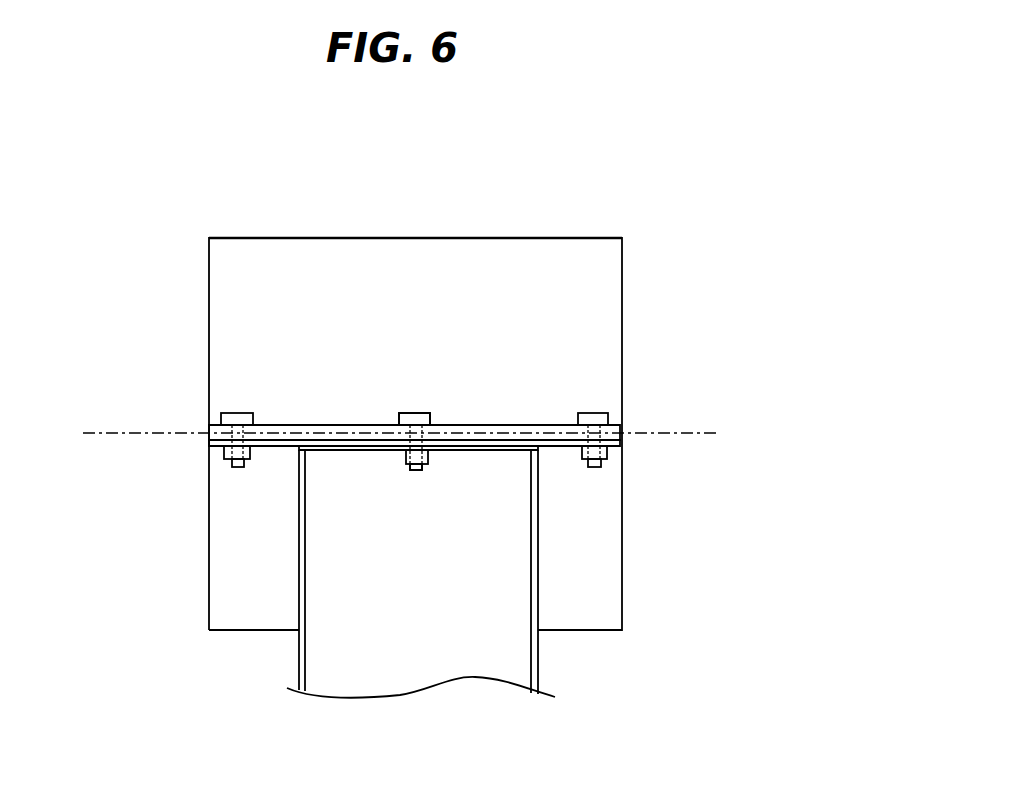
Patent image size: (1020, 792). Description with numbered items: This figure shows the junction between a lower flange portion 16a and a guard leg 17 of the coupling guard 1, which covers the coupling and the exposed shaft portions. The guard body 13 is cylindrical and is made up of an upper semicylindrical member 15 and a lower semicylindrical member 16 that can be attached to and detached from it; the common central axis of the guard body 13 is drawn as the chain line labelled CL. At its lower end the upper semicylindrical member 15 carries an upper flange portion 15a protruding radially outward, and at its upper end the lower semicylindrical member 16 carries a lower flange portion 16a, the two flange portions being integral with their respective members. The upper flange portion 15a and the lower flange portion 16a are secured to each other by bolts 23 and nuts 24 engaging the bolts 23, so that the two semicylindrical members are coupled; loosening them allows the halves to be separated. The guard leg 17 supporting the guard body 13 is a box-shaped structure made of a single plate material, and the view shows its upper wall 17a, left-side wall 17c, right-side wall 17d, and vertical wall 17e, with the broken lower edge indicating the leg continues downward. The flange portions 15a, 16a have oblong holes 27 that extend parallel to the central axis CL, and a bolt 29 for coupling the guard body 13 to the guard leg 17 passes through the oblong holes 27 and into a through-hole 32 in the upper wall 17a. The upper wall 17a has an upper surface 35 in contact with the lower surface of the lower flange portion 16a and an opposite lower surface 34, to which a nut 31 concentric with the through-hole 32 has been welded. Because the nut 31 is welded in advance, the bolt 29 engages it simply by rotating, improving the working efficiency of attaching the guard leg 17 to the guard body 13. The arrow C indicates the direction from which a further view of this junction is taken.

The coupling guard 1 is at (256, 229).
The guard body 13 is at (348, 238).
The upper semicylindrical member 15 is at (463, 238).
The upper flange portion 15a is at (507, 427).
The lower semicylindrical member 16 is at (262, 630).
The lower flange portion 16a is at (565, 446).
The guard leg 17 is at (492, 572).
The upper wall 17a is at (344, 455).
The left-side wall 17c is at (306, 610).
The right-side wall 17d is at (531, 608).
The vertical wall 17e is at (487, 658).
The bolt 23 is at (230, 413).
The nut 24 is at (223, 450).
The oblong hole 27 is at (437, 427).
The bolt 29 is at (406, 414).
The nut 31 is at (404, 467).
The through-hole 32 is at (428, 470).
The lower surface 34 is at (488, 450).
The upper surface 35 is at (323, 440).
The arrow C is at (413, 387).
The central axis CL is at (423, 435).